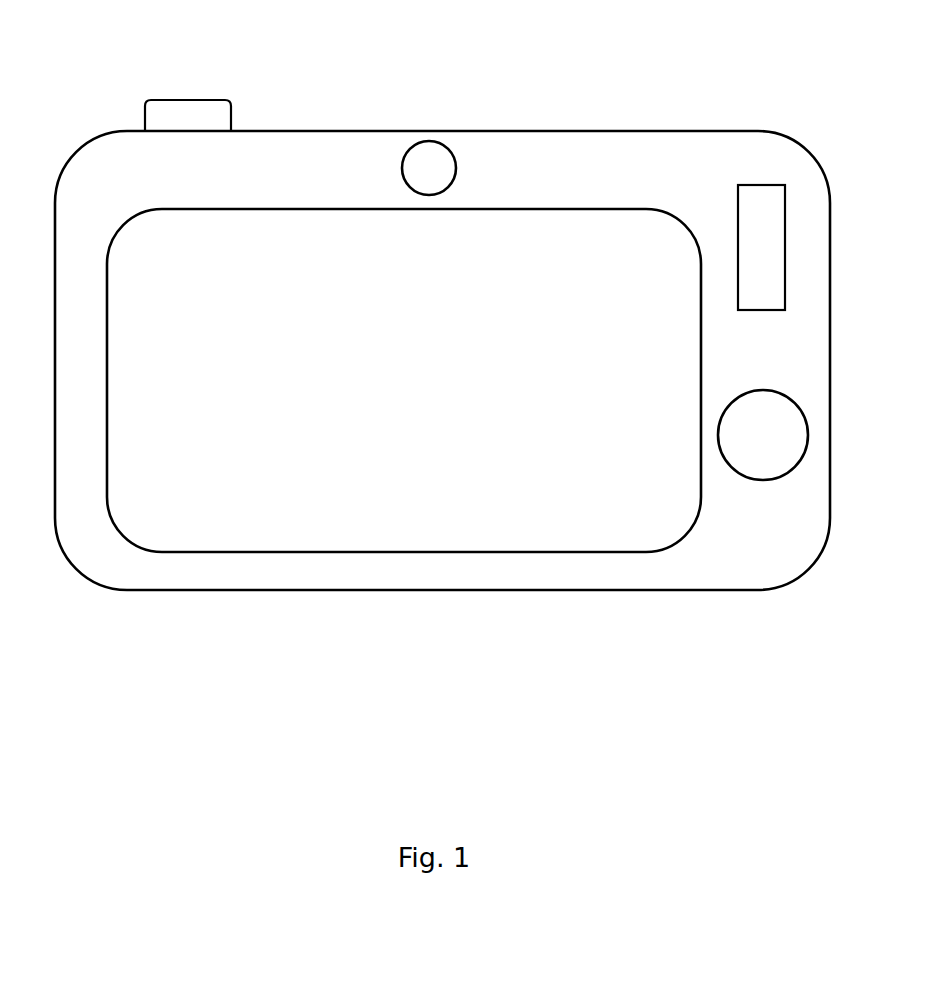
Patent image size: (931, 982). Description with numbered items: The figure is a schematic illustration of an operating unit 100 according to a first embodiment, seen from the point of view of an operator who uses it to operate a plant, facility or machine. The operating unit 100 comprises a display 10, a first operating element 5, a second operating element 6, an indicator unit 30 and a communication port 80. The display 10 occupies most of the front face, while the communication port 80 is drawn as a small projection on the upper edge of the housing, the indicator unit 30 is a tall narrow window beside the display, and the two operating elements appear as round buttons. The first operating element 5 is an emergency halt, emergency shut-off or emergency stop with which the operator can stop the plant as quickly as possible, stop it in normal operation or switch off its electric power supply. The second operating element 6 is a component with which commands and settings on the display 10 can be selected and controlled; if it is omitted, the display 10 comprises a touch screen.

The operating unit 100 is at (65, 143).
The display 10 is at (580, 208).
The communication port 80 is at (225, 99).
The second operating element 6 is at (460, 165).
The indicator unit 30 is at (766, 184).
The first operating element 5 is at (745, 481).